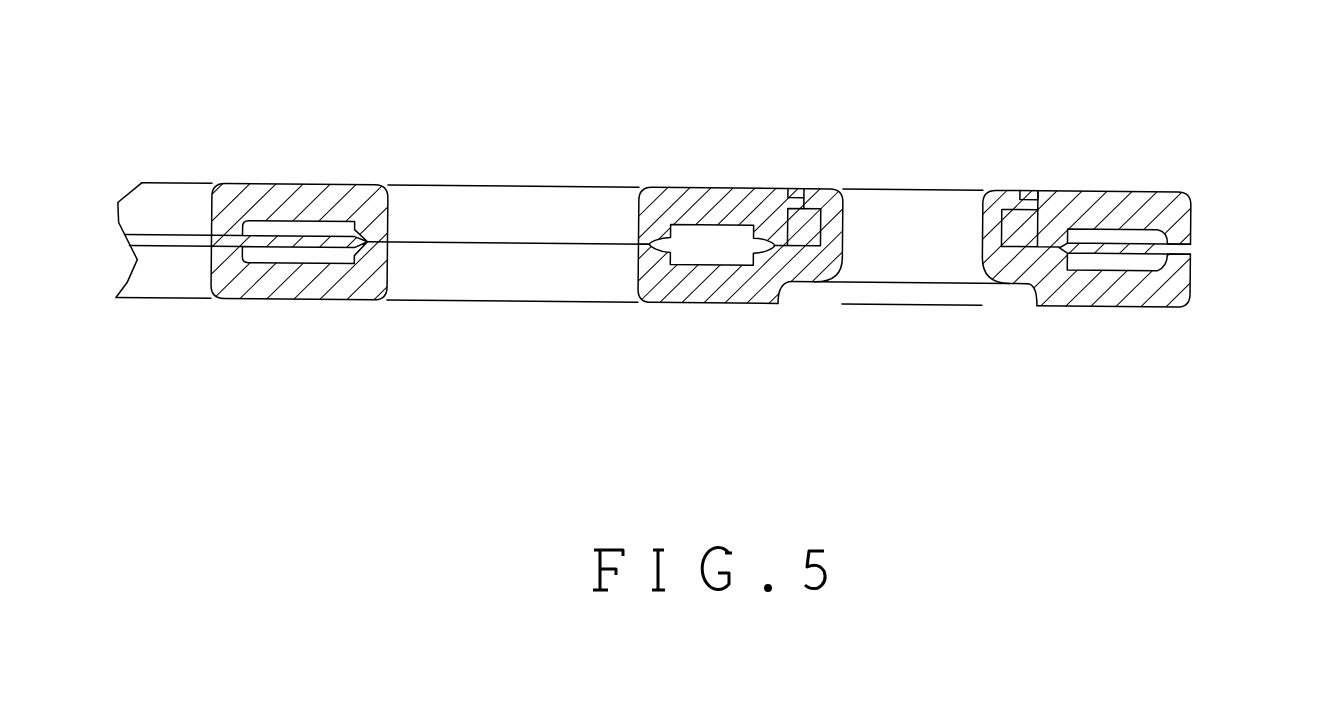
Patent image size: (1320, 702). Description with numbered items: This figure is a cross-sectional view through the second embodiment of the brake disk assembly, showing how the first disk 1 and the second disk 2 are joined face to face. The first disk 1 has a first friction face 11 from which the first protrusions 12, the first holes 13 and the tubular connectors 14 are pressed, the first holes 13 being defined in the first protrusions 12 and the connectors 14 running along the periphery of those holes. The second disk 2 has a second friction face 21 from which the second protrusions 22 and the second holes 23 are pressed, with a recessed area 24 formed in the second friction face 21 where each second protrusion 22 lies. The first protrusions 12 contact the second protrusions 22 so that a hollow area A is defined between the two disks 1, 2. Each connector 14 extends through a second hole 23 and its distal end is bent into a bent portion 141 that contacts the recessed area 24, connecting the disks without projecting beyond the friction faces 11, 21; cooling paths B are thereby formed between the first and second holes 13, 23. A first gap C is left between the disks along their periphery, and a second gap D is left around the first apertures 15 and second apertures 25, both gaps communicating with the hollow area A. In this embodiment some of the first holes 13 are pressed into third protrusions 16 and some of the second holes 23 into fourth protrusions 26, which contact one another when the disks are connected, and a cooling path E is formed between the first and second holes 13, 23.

The first disk 1 is at (1192, 277).
The second disk 2 is at (1195, 211).
The first friction face 11 is at (1148, 310).
The first protrusions 12 is at (1018, 268).
The first holes 13 is at (915, 306).
The connectors 14 is at (986, 270).
The bent portion 141 is at (1033, 192).
The first apertures 15 is at (165, 278).
The third protrusions 16 is at (666, 280).
The second friction face 21 is at (1165, 192).
The second protrusions 22 is at (1032, 216).
The second holes 23 is at (888, 188).
The recessed area 24 is at (1015, 197).
The second apertures 25 is at (192, 222).
The fourth protrusions 26 is at (664, 232).
The hollow area A is at (1100, 247).
The cooling paths B is at (918, 230).
The first gap C is at (1193, 250).
The second gap D is at (224, 275).
The cooling path E is at (585, 200).